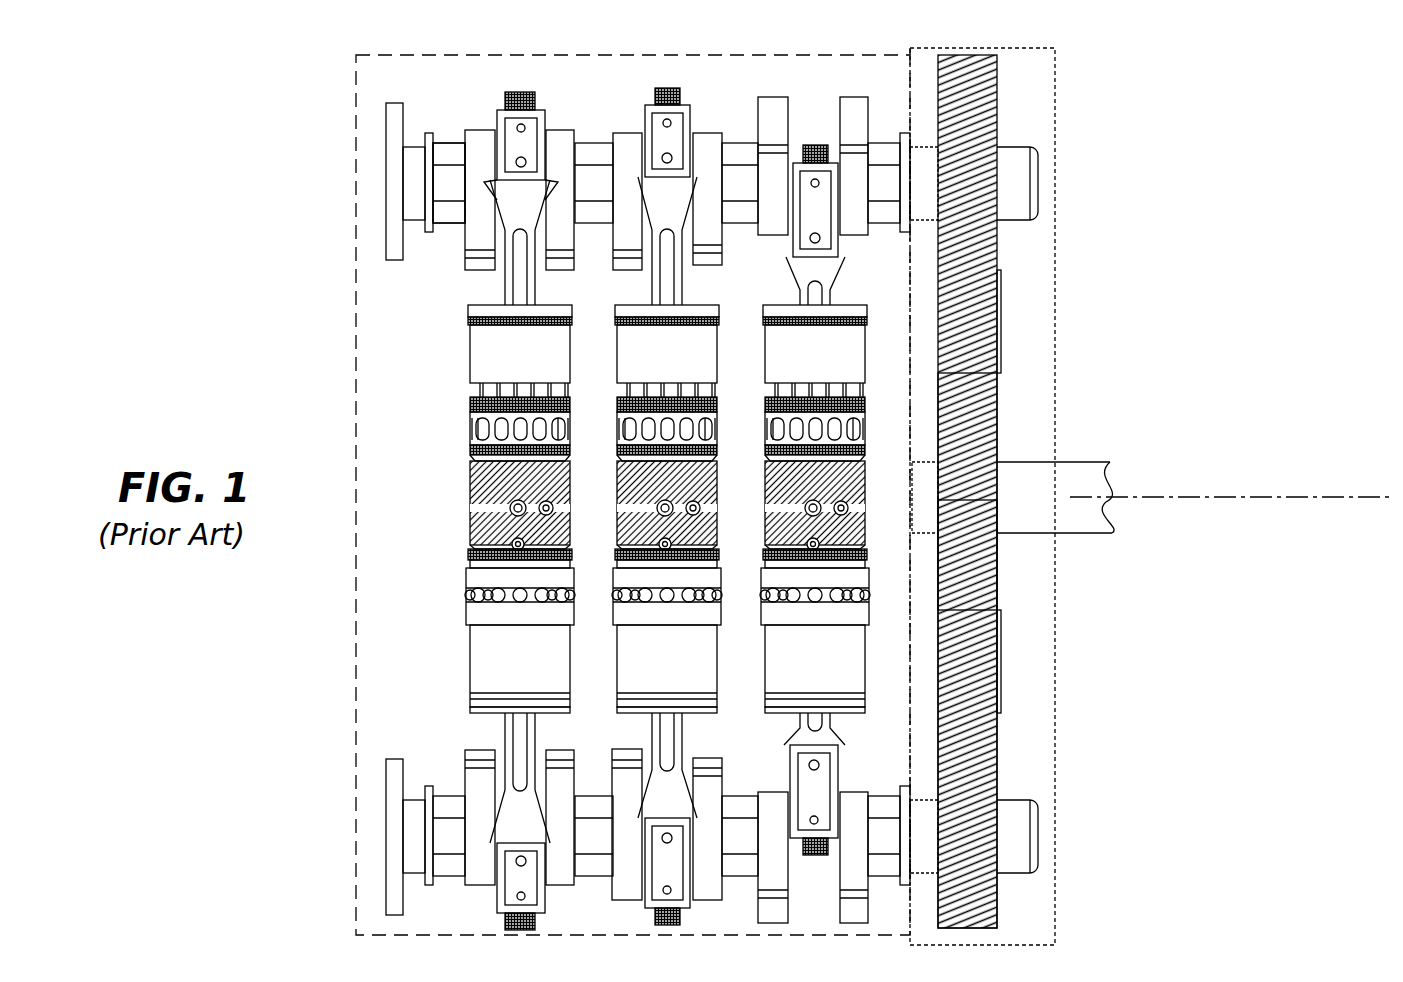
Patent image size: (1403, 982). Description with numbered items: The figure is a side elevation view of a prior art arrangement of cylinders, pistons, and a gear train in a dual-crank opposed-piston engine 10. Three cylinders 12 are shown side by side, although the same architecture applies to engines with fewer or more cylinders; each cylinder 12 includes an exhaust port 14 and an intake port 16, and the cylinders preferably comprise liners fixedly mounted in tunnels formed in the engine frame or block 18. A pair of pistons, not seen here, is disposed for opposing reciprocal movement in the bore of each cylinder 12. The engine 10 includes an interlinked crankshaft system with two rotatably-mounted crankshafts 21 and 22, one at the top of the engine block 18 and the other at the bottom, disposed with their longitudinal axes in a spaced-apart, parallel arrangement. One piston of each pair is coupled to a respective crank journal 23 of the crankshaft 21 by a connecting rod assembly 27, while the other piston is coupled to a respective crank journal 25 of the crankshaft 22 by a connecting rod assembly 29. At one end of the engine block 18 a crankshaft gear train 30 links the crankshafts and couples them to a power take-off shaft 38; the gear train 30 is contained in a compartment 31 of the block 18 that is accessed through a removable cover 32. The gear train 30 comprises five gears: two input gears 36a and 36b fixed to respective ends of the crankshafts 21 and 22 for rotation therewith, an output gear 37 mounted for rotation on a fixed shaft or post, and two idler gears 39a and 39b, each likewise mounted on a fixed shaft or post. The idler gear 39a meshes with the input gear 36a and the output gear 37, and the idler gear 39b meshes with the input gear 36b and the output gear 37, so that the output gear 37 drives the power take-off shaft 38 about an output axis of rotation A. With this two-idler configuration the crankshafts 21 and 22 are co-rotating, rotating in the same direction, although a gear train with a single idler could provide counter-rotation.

The opposed-piston engine 10 is at (413, 102).
The cylinder 12 is at (572, 373).
The exhaust port 14 is at (445, 434).
The intake port 16 is at (445, 602).
The engine frame or block 18 is at (356, 166).
The crankshaft 21 is at (447, 234).
The crankshaft 22 is at (421, 751).
The crank journal 23 is at (556, 114).
The crank journal 25 is at (560, 884).
The connecting rod assembly 27 is at (533, 292).
The connecting rod assembly 29 is at (500, 737).
The crankshaft gear train 30 is at (1151, 488).
The compartment 31 is at (935, 49).
The removable cover 32 is at (1055, 282).
The input gear 36a is at (975, 90).
The input gear 36b is at (997, 893).
The output gear 37 is at (997, 432).
The power take-off shaft 38 is at (1151, 492).
The idler gear 39a is at (985, 375).
The idler gear 39b is at (997, 605).
The output axis of rotation A is at (1255, 500).